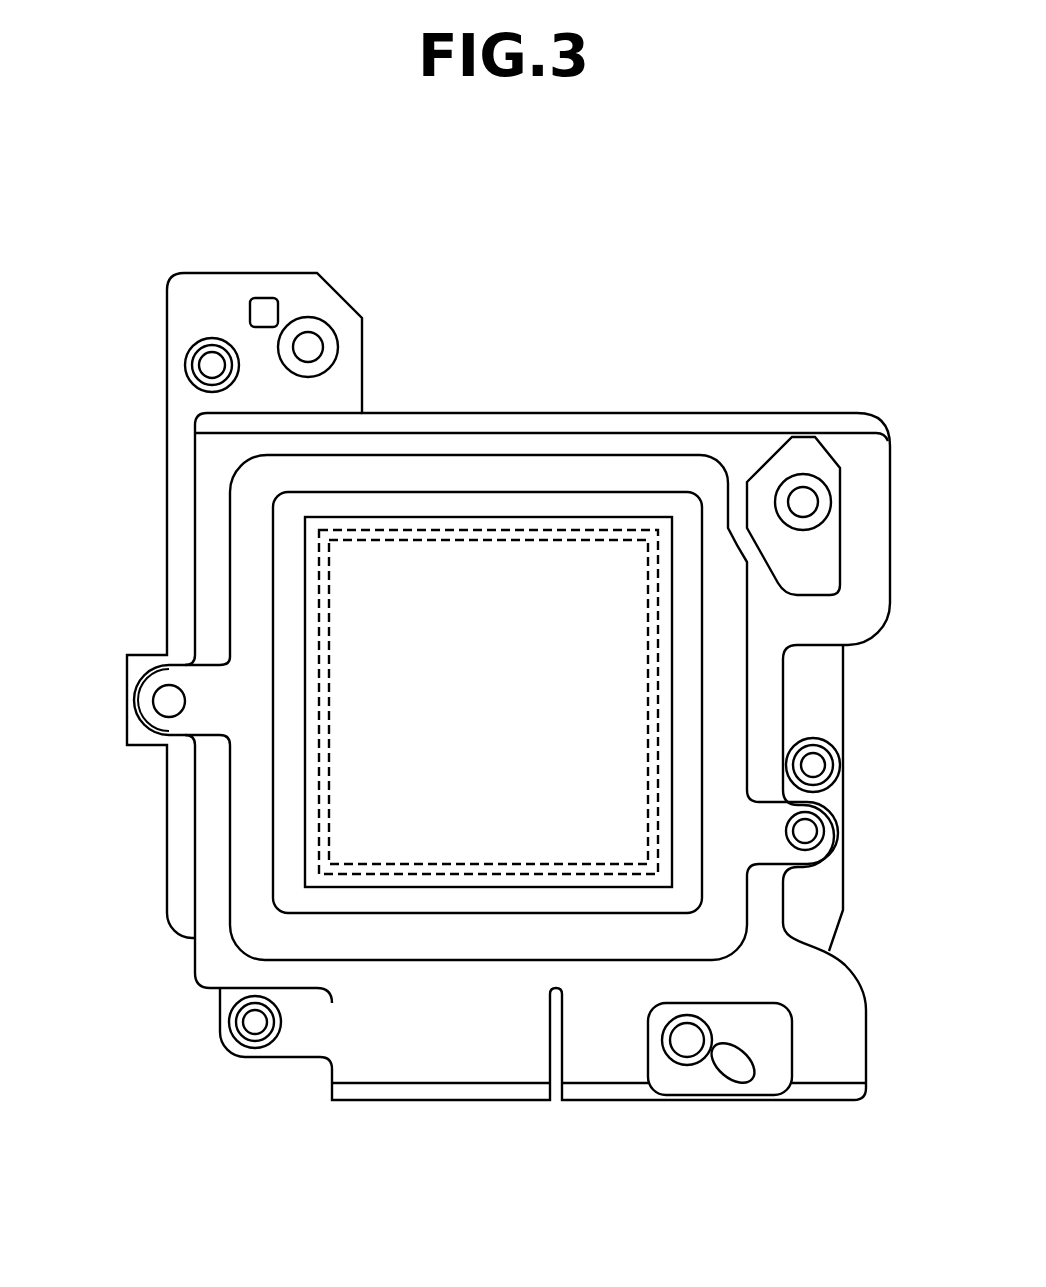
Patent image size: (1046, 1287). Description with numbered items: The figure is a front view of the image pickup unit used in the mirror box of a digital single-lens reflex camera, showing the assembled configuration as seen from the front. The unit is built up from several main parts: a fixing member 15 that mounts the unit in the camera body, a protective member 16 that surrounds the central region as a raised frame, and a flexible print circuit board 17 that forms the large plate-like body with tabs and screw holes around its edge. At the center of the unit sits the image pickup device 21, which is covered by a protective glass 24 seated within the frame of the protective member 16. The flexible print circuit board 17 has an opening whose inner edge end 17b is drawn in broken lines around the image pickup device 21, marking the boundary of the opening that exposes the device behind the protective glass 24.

The fixing member 15 is at (328, 322).
The protective member 16 is at (252, 825).
The flexible print circuit board 17 is at (822, 1057).
The inner edge end 17b is at (535, 530).
The image pickup device 21 is at (372, 866).
The protective glass 24 is at (672, 857).